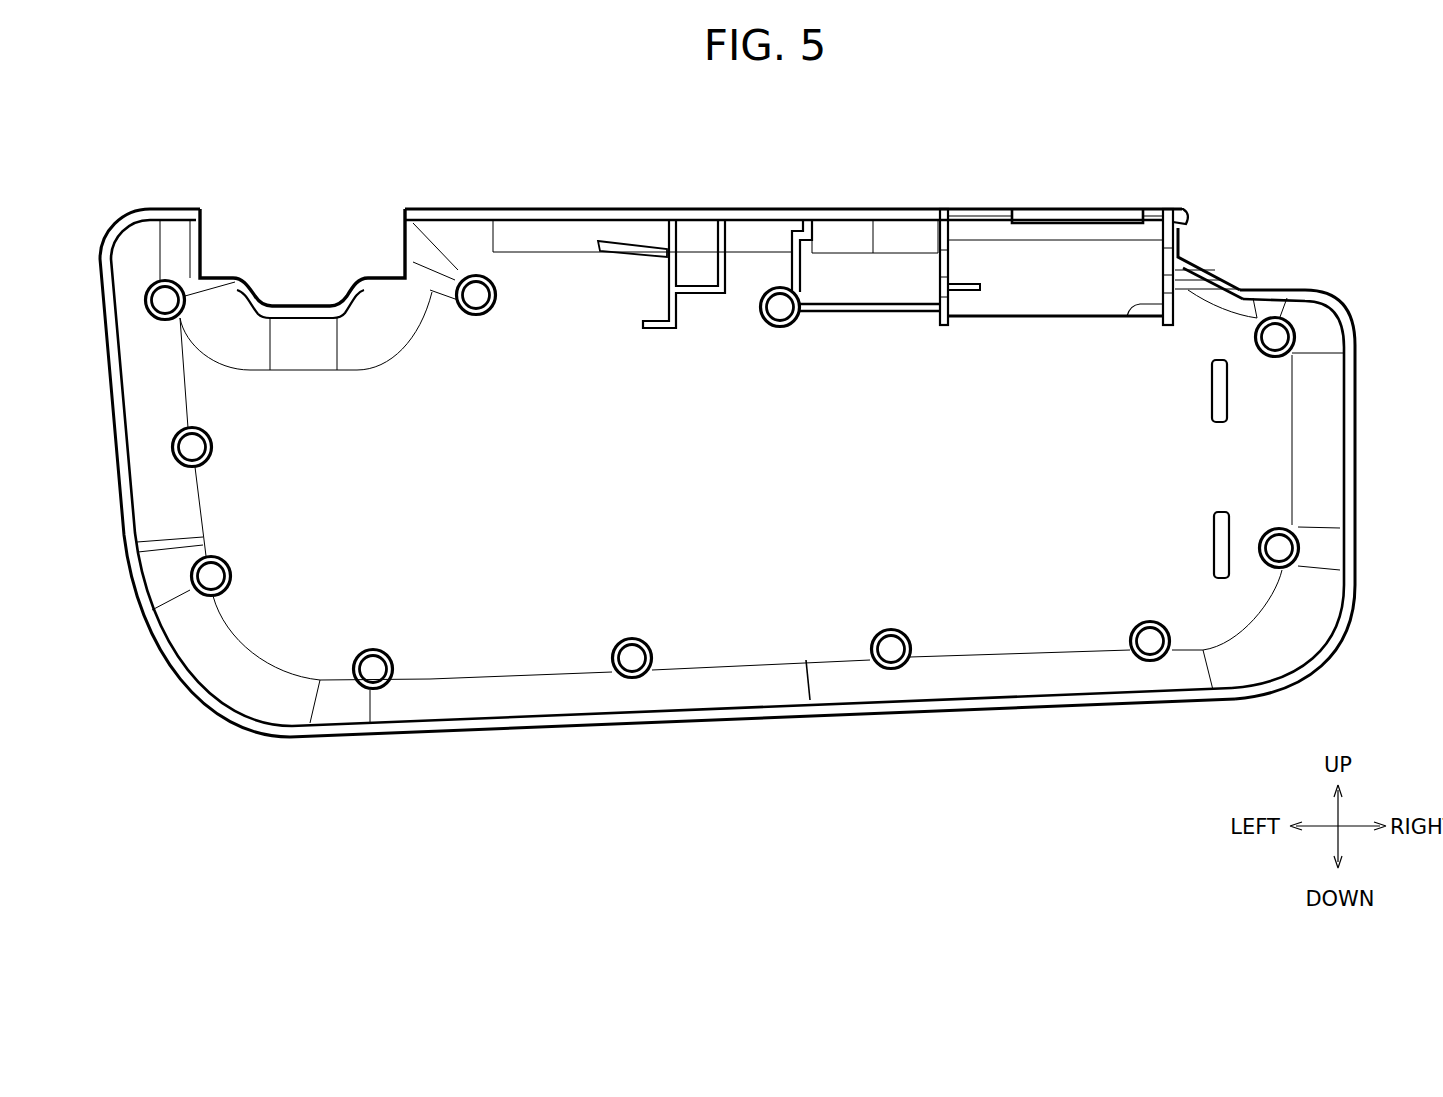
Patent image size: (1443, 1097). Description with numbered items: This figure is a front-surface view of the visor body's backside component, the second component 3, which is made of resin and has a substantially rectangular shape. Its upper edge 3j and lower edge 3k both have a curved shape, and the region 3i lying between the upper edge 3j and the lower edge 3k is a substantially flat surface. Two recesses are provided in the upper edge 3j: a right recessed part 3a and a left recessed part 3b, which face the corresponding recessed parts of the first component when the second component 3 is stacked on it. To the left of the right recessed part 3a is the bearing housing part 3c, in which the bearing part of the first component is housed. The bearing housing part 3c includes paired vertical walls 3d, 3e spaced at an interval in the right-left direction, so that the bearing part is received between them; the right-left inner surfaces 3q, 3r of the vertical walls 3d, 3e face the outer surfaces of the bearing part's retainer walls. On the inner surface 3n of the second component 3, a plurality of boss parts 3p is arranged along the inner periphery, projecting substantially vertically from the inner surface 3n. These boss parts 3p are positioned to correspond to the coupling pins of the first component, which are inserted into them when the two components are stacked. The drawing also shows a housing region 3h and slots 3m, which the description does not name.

The second component 3 is at (529, 742).
The right recessed part 3a is at (1209, 257).
The left recessed part 3b is at (299, 296).
The bearing housing part 3c is at (1000, 200).
The vertical wall 3d is at (942, 209).
The vertical wall 3e is at (1172, 209).
The housing portion 3h is at (1053, 291).
The region 3i is at (906, 509).
The upper edge 3j is at (520, 209).
The lower edge 3k is at (687, 718).
The slit 3m is at (1212, 393).
The inner surface 3n is at (808, 628).
The boss part 3p is at (1274, 336).
The inner surface 3q is at (950, 305).
The inner surface 3r is at (1127, 316).